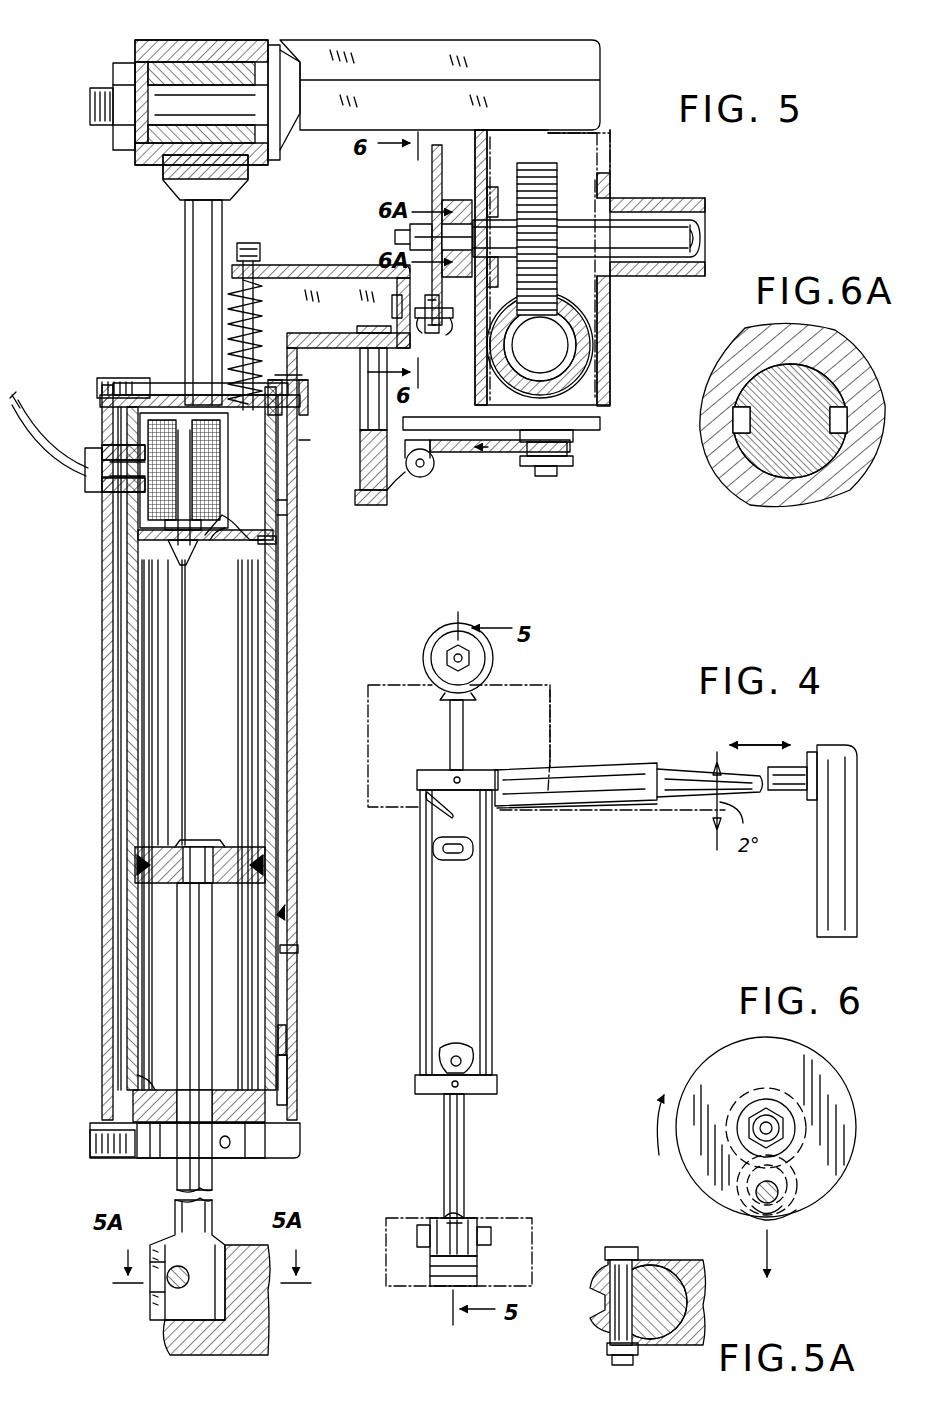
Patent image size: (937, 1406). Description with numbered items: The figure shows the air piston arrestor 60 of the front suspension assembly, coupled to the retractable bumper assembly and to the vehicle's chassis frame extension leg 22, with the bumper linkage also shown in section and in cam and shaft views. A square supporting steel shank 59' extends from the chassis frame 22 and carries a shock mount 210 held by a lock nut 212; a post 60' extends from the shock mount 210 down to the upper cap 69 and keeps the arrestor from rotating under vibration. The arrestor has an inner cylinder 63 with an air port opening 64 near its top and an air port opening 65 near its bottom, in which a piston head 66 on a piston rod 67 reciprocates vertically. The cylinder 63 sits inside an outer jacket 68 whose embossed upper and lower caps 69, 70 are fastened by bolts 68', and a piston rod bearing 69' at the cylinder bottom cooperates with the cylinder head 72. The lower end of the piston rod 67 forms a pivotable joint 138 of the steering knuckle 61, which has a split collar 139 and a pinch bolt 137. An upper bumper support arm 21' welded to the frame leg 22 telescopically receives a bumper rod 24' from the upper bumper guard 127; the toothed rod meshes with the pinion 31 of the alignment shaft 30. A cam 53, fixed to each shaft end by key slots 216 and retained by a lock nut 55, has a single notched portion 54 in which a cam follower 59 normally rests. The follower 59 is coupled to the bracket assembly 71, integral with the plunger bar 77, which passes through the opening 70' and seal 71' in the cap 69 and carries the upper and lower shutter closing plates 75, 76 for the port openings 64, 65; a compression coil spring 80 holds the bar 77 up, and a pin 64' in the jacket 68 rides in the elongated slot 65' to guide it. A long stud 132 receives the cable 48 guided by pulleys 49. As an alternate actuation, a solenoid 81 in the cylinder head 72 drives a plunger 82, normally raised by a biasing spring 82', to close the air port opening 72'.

In FIG. 5, the shock mount 210 is at (182, 38).
In FIG. 4, the shock mount 210 is at (432, 630).
In FIG. 5, the lock nut 212 is at (120, 62).
In FIG. 4, the lock nut 212 is at (445, 658).
In FIG. 5, the supporting steel shank 59' is at (440, 72).
In FIG. 5, the post 60' is at (184, 302).
In FIG. 4, the post 60' is at (431, 735).
In FIG. 5, the chassis frame extension leg 22 is at (604, 394).
In FIG. 5, the pinion 31 is at (557, 177).
In FIG. 5, the front alignment shaft 30 is at (690, 230).
In FIG. 6, the front alignment shaft 30 is at (771, 1089).
In FIG. 6A, the front alignment shaft 30 is at (772, 366).
In FIG. 5, the cam 53 is at (432, 178).
In FIG. 6, the cam 53 is at (826, 1062).
In FIG. 6A, the cam 53 is at (855, 368).
In FIG. 5, the cam follower 59 is at (438, 333).
In FIG. 6, the cam follower 59 is at (792, 1210).
In FIG. 5, the bracket assembly 71 is at (321, 315).
In FIG. 5, the compression coil spring 80 is at (260, 342).
In FIG. 5, the seal 71' is at (348, 354).
In FIG. 5, the opening 70' is at (311, 395).
In FIG. 5, the long stud 132 is at (360, 425).
In FIG. 5, the cable 48 is at (462, 455).
In FIG. 5, the pulleys 49 is at (575, 458).
In FIG. 5, the outer jacket 68 is at (219, 734).
In FIG. 4, the outer jacket 68 is at (443, 932).
In FIG. 5, the inner cylinder 63 is at (278, 773).
In FIG. 5, the upper cap 69 is at (200, 374).
In FIG. 5, the bolts 68' is at (80, 768).
In FIG. 5, the electro-magnetic solenoid 81 is at (205, 470).
In FIG. 5, the plunger 82 is at (166, 487).
In FIG. 5, the biasing spring 82' is at (235, 547).
In FIG. 5, the air port opening 72' is at (185, 569).
In FIG. 5, the cylinder head 72 is at (200, 825).
In FIG. 5, the air port opening 64 is at (302, 549).
In FIG. 5, the stud or pin 64' is at (321, 941).
In FIG. 5, the upper shutter closing plate 75 is at (298, 510).
In FIG. 5, the plunger bar 77 is at (297, 457).
In FIG. 5, the piston head 66 is at (165, 847).
In FIG. 5, the piston rod 67 is at (212, 1180).
In FIG. 4, the piston rod 67 is at (465, 1139).
In FIG. 5, the air port opening 65 is at (239, 1088).
In FIG. 5, the vertically elongated slot 65' is at (316, 917).
In FIG. 5, the lower shutter closing plate 76 is at (290, 1046).
In FIG. 5, the air piston arrestor 60 is at (324, 973).
In FIG. 4, the air piston arrestor 60 is at (523, 953).
In FIG. 5, the lower cap 70 is at (214, 1151).
In FIG. 5, the piston rod bearing 69' is at (101, 1074).
In FIG. 5, the steering knuckle 61 is at (165, 1345).
In FIG. 4, the steering knuckle 61 is at (427, 1284).
In FIG. 5A, the steering knuckle 61 is at (686, 1260).
In FIG. 5, the pinch bolt 137 is at (170, 1283).
In FIG. 4, the pinch bolt 137 is at (484, 1240).
In FIG. 5A, the pinch bolt 137 is at (628, 1246).
In FIG. 5, the split collar 139 is at (158, 1320).
In FIG. 4, the split collar 139 is at (466, 1221).
In FIG. 5A, the split collar 139 is at (606, 1312).
In FIG. 5, the pivotable joint 138 is at (280, 1338).
In FIG. 4, the bumper support arm 21' is at (576, 774).
In FIG. 4, the bumper rod 24' is at (696, 755).
In FIG. 4, the upper bumper guard 127 is at (850, 800).
In FIG. 6, the lock nut 55 is at (744, 1110).
In FIG. 6, the notched portion 54 is at (779, 1186).
In FIG. 6A, the key slots 216 is at (735, 420).